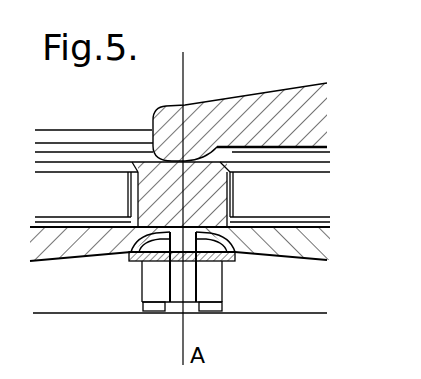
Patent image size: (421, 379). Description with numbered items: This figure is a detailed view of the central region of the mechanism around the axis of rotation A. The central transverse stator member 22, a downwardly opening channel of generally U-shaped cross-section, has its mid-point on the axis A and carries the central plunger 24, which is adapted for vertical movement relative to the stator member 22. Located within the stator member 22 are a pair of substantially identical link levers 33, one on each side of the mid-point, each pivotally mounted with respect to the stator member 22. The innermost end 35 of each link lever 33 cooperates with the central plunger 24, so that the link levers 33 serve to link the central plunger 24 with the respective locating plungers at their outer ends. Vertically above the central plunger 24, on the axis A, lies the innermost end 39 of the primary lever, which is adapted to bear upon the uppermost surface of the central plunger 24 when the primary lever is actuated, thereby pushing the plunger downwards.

The central transverse stator member 22 is at (318, 294).
The central plunger 24 is at (162, 205).
The link lever 33 is at (53, 240).
The innermost end of link lever 35 is at (114, 253).
The innermost end of primary lever 39 is at (172, 142).